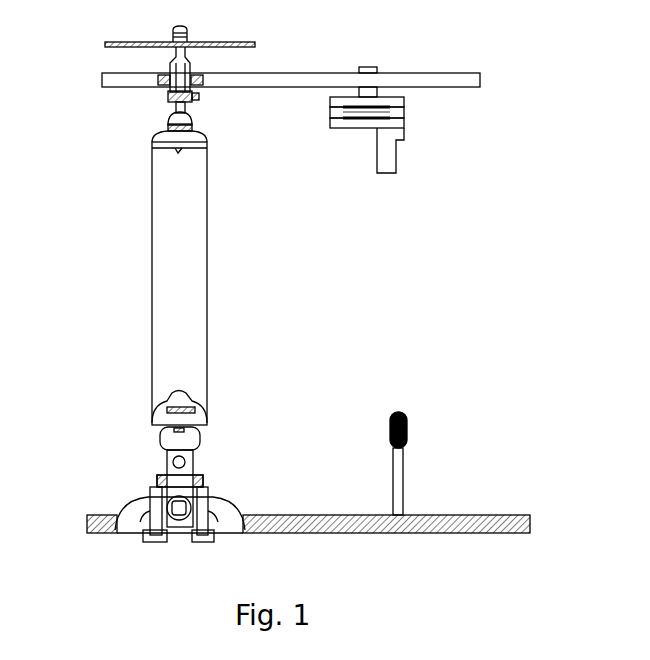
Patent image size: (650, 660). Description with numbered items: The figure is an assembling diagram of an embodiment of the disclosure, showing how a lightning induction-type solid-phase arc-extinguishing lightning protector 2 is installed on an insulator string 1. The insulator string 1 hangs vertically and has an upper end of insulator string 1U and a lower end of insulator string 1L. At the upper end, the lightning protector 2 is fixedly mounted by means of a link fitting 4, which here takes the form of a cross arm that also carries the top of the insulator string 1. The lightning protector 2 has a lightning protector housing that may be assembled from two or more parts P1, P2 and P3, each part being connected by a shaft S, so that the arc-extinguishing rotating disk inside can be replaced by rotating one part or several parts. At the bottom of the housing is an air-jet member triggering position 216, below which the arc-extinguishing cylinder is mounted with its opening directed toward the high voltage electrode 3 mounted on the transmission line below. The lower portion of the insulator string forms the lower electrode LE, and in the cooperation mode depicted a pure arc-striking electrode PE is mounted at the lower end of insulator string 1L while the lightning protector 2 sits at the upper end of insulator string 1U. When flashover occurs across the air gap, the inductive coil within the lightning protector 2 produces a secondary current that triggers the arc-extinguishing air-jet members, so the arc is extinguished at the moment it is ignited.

The insulator string 1 is at (152, 275).
The upper end of insulator string 1U is at (153, 138).
The lower end of insulator string 1L is at (160, 403).
The link fitting 4 is at (318, 82).
The lightning induction-type solid-phase arc-extinguishing lightning protector 2 is at (376, 155).
The part of lightning protector housing P1 is at (335, 106).
The part of lightning protector housing P2 is at (335, 117).
The part of lightning protector housing P3 is at (335, 127).
The shaft S is at (387, 120).
The air-jet member triggering position 216 is at (397, 123).
The high voltage electrode 3 is at (455, 413).
The lower electrode LE is at (407, 433).
The pure arc-striking electrode PE is at (407, 447).